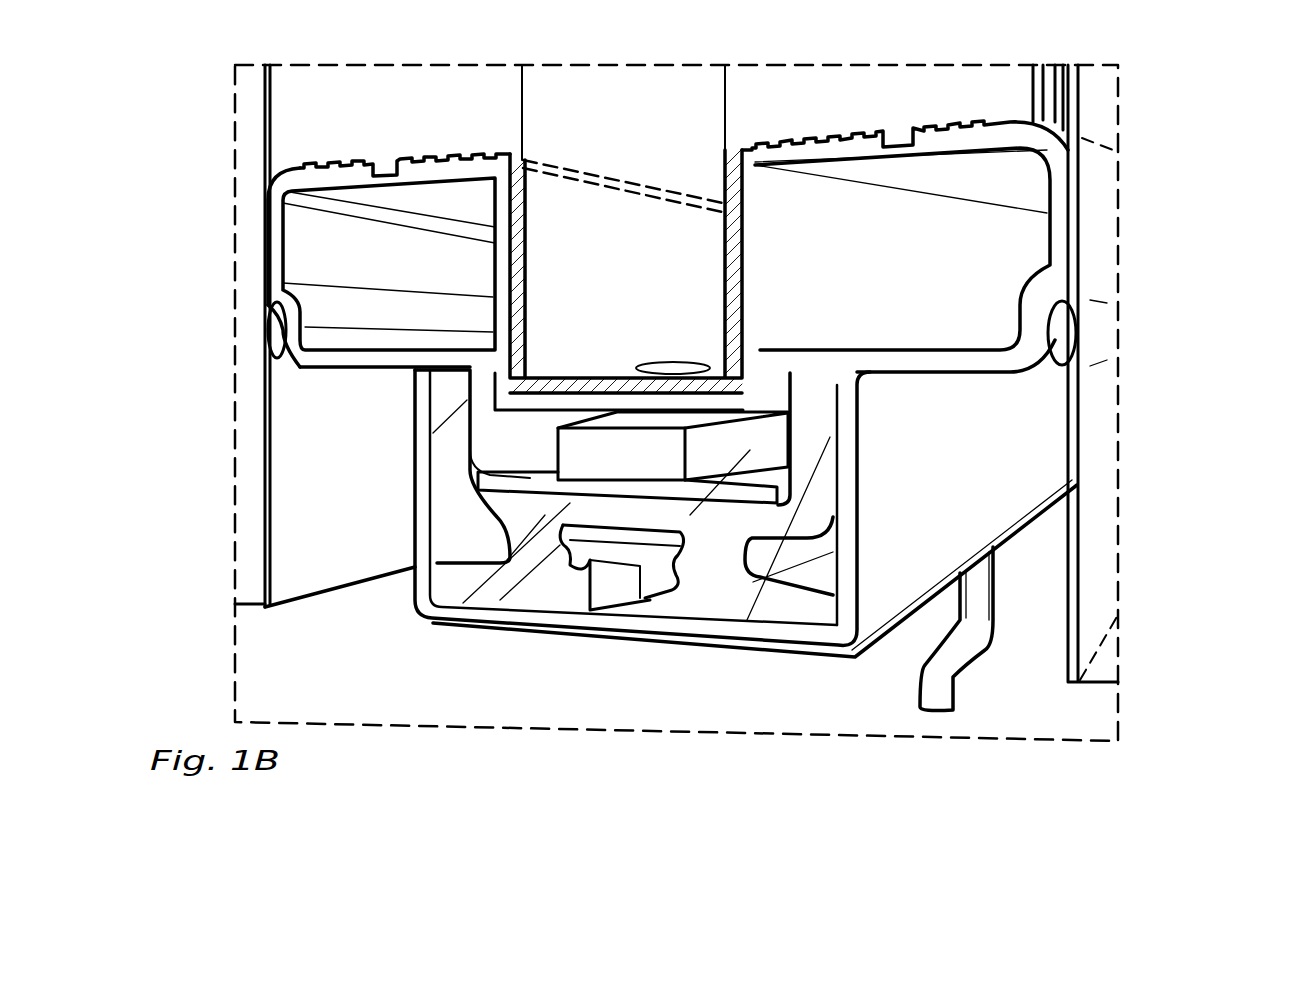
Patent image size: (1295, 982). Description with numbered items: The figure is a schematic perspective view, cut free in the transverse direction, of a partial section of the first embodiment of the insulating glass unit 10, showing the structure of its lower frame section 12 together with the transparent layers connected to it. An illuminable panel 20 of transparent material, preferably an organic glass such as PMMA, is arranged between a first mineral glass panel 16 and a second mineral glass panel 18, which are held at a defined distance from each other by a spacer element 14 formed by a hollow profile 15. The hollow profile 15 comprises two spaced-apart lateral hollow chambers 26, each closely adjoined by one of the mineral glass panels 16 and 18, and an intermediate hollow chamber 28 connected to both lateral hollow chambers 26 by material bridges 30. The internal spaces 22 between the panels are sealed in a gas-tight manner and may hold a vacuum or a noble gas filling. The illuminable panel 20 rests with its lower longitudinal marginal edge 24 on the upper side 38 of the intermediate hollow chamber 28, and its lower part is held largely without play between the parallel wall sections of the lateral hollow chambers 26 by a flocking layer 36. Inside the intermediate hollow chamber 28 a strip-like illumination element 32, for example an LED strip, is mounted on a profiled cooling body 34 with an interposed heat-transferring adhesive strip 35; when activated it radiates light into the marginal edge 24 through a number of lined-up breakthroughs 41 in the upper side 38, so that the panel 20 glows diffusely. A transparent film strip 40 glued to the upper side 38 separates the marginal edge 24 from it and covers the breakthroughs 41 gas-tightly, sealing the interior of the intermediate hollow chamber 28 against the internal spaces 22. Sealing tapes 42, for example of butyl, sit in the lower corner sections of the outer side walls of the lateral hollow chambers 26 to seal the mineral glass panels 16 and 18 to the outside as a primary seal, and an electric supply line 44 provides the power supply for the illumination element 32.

The insulating glass unit 10 is at (767, 749).
The lower frame section 12 is at (1099, 409).
The spacer element 14 is at (867, 668).
The hollow profile 15 is at (1072, 488).
The first mineral glass panel 16 is at (262, 229).
The second mineral glass panel 18 is at (1115, 229).
The illuminable panel 20 is at (646, 133).
The internal spaces 22 is at (418, 131).
The lower longitudinal marginal edge 24 is at (608, 366).
The lateral hollow chambers 26 is at (403, 273).
The intermediate hollow chamber 28 is at (638, 605).
The material bridges 30 is at (460, 358).
The illumination element 32 is at (657, 463).
The cooling body 34 is at (726, 599).
The heat-transferring adhesive strip 35 is at (513, 480).
The flocking layer 36 is at (720, 202).
The upper side 38 is at (543, 397).
The transparent film strip 40 is at (558, 378).
The breakthroughs 41 is at (677, 359).
The sealing tapes 42 is at (273, 333).
The electric supply line 44 is at (947, 673).